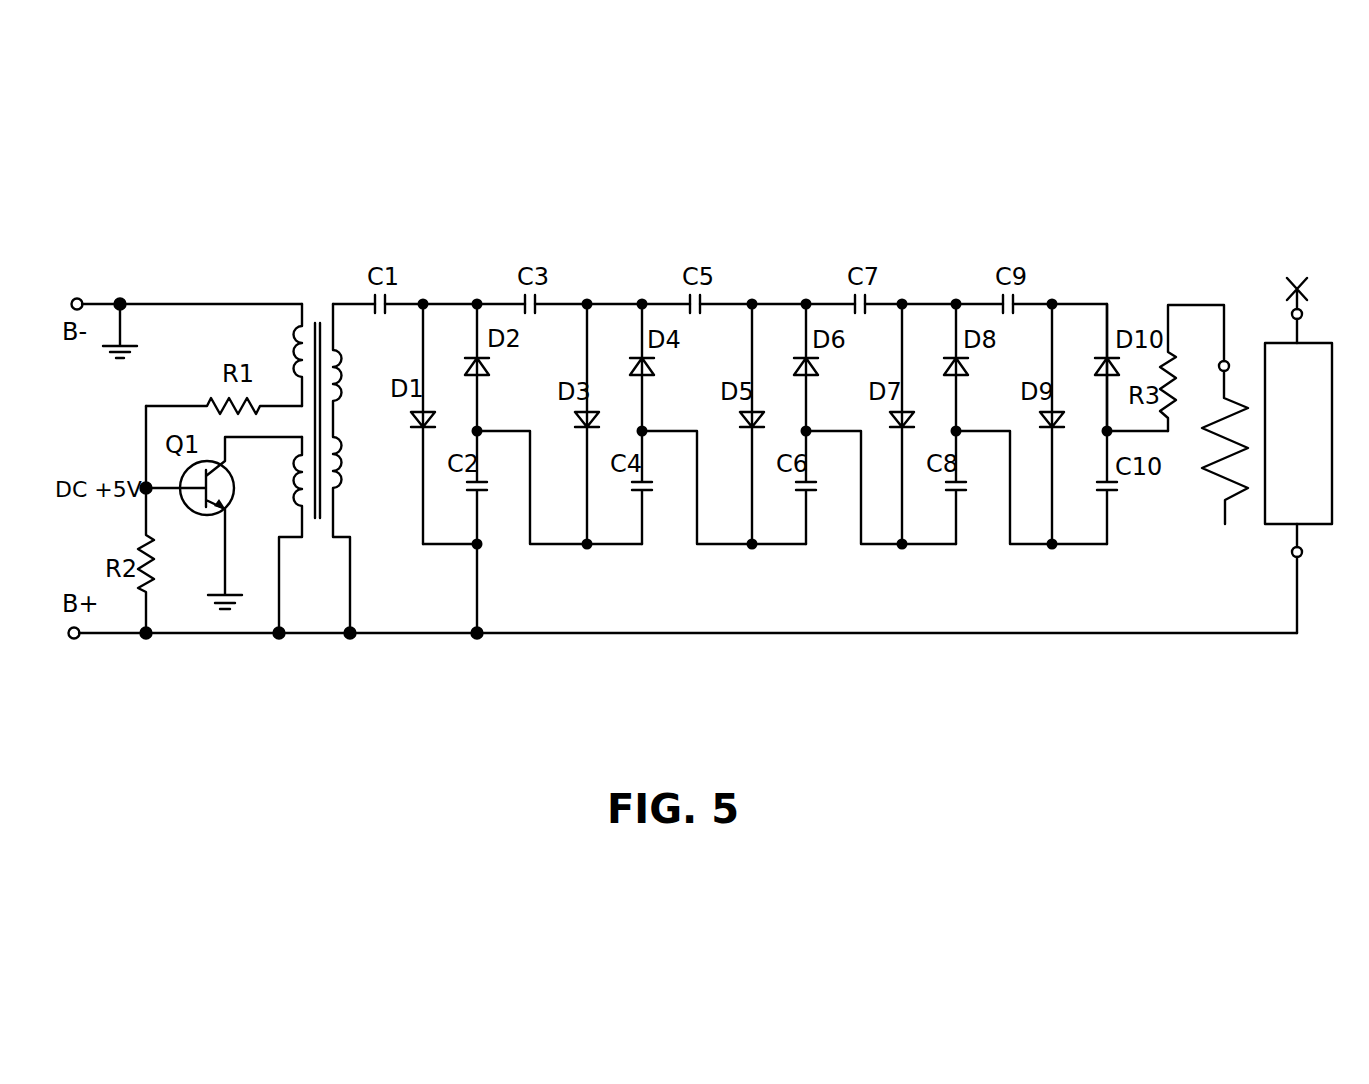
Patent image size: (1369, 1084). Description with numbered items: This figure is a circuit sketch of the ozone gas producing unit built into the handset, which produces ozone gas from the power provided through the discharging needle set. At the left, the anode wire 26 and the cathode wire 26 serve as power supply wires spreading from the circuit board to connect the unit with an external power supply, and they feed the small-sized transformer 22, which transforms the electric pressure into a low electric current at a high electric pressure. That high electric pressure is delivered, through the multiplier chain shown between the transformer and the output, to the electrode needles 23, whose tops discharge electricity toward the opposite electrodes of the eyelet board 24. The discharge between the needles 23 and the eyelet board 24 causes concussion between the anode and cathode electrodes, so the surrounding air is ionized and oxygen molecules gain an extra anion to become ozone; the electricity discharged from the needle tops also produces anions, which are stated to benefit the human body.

The transformer 22 is at (329, 266).
The electrode needle 23 is at (1240, 505).
The eyelet board 24 is at (1306, 503).
The power supply wire 26 is at (71, 288).